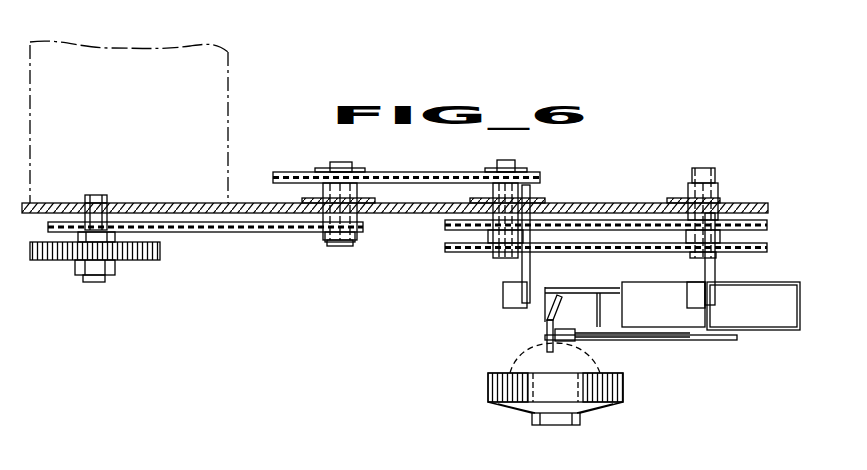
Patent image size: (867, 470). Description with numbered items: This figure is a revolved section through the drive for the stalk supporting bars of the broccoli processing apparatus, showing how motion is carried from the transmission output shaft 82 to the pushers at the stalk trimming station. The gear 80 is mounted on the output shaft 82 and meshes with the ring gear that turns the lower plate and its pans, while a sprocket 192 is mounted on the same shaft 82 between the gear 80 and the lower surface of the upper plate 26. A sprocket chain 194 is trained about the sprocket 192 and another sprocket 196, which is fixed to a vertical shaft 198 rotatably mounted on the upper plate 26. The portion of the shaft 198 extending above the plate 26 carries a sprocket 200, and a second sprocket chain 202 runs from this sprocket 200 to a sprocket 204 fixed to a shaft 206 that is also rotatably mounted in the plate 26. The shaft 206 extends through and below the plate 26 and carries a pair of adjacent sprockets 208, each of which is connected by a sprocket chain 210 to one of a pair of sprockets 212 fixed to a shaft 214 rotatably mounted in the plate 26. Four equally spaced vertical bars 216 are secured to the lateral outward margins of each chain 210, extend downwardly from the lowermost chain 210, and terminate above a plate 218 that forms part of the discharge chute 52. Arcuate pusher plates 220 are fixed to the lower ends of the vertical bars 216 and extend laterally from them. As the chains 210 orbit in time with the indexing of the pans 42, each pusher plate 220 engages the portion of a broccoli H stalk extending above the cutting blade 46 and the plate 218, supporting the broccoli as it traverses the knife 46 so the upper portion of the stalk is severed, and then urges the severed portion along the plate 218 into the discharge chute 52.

The upper plate 26 is at (194, 203).
The broccoli supporting pan 42 is at (488, 388).
The cutting blade 46 is at (680, 340).
The discharge chute 52 is at (773, 332).
The gear 80 is at (32, 252).
The output shaft 82 is at (98, 195).
The sprocket 192 is at (112, 222).
The sprocket chain 194 is at (198, 232).
The sprocket 196 is at (332, 240).
The vertical shaft 198 is at (341, 162).
The sprocket 200 is at (292, 160).
The sprocket chain 202 is at (378, 176).
The sprocket 204 is at (520, 176).
The shaft 206 is at (505, 160).
The pair of adjacent sprockets 208 is at (445, 228).
The sprocket chains 210 is at (620, 250).
The pair of sprockets 212 is at (762, 236).
The shaft 214 is at (712, 170).
The vertical bars 216 is at (510, 281).
The plate 218 is at (728, 325).
The arcuate pusher plates 220 is at (503, 298).
The broccoli H is at (492, 362).